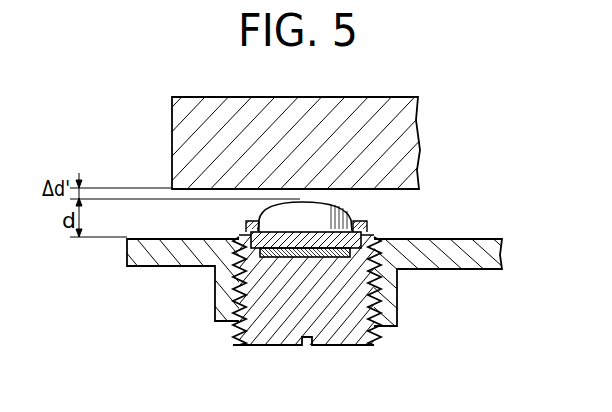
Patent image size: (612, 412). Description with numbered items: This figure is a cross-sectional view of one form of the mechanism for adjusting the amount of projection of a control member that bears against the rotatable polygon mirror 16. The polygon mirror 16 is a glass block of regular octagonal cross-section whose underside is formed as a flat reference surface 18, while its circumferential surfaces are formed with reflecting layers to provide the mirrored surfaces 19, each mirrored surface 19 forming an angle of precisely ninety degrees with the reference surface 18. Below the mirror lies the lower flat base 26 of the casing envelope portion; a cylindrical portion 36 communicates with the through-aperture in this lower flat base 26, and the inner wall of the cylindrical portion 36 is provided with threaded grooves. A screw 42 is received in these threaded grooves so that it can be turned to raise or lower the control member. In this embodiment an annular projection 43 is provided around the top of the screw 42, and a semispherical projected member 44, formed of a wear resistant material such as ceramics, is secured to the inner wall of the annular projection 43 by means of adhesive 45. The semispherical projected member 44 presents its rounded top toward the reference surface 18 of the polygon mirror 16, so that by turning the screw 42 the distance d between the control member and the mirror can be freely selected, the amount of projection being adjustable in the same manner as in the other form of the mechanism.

The polygon mirror 16 is at (410, 147).
The mirrored surfaces 19 is at (172, 108).
The reference surface 18 is at (180, 192).
The lower flat base 26 is at (478, 258).
The cylindrical portion 36 is at (386, 300).
The screw 42 is at (337, 336).
The annular projection 43 is at (368, 234).
The semispherical projected member 44 is at (322, 216).
The adhesive 45 is at (248, 228).